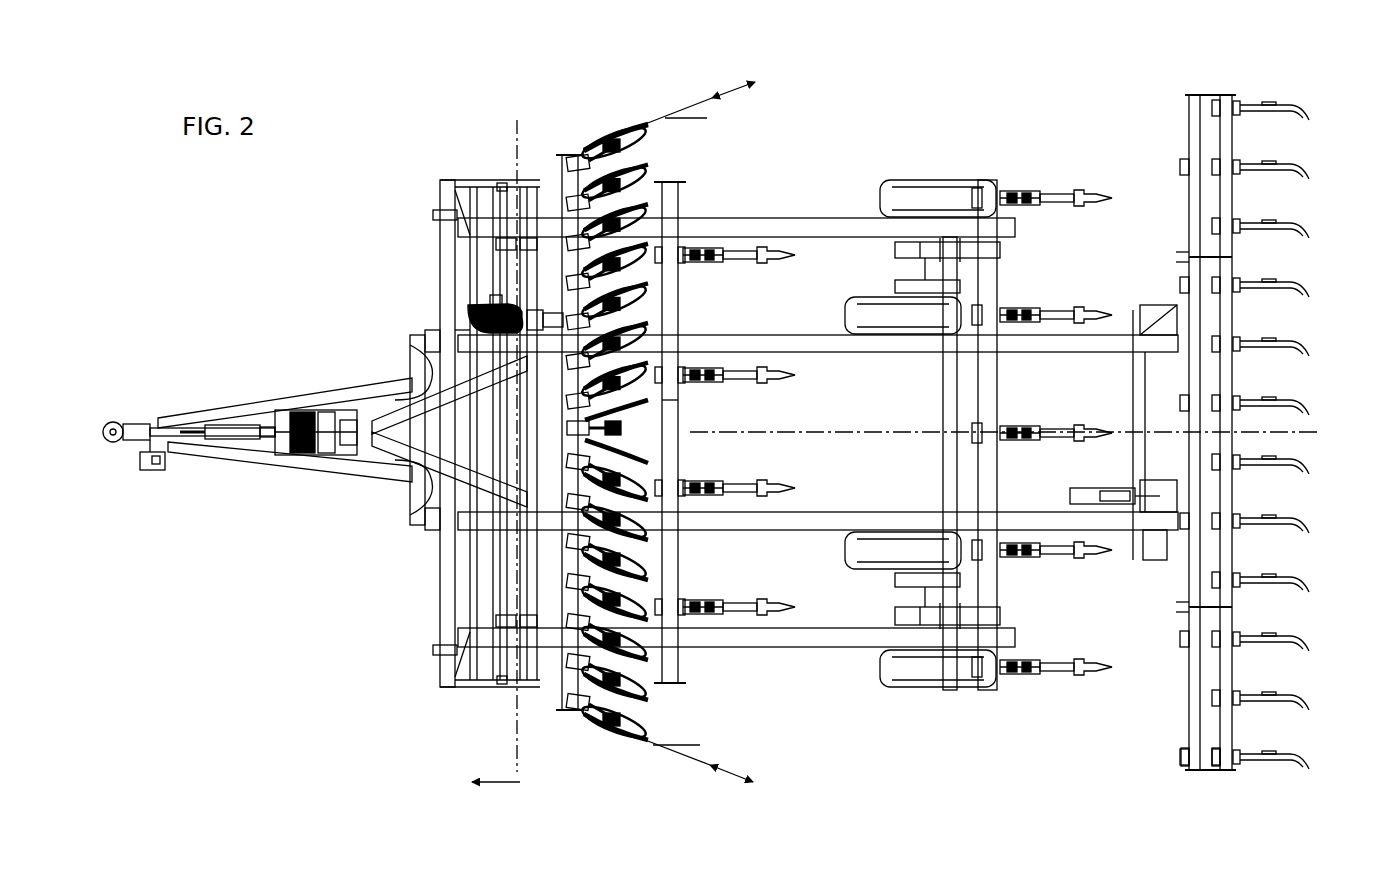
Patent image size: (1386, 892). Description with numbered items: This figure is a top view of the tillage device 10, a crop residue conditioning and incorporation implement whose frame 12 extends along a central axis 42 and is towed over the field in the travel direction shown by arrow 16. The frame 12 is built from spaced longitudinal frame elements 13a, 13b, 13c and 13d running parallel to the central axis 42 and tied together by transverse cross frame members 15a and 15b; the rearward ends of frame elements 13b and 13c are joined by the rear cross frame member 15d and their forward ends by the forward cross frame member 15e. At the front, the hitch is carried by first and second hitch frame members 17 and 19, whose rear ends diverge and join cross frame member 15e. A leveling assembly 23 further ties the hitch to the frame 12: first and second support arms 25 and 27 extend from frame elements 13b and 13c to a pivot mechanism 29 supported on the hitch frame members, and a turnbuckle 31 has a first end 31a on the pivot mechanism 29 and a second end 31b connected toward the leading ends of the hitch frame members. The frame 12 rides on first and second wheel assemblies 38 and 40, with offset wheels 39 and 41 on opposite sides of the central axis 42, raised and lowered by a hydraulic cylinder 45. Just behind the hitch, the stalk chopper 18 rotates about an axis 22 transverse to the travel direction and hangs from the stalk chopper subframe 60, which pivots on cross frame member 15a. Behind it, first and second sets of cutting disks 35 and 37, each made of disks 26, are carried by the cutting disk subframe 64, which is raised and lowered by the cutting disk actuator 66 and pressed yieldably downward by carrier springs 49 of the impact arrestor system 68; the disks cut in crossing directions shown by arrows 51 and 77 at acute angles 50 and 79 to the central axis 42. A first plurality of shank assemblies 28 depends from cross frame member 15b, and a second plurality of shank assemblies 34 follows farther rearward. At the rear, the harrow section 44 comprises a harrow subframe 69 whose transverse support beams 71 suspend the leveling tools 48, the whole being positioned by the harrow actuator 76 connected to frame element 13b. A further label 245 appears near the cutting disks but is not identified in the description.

The tillage device 10 is at (335, 625).
The frame 12 is at (705, 650).
The frame element 13a is at (752, 645).
The frame element 13b is at (750, 527).
The frame element 13c is at (818, 355).
The frame element 13d is at (793, 218).
The cross frame member 15a is at (466, 686).
The cross frame member 15b is at (675, 450).
The rear cross frame member 15d is at (1135, 380).
The forward cross frame member 15e is at (404, 503).
The travel direction 16 is at (493, 786).
The first hitch frame member 17 is at (242, 410).
The stalk chopper 18 is at (499, 178).
The second hitch frame member 19 is at (230, 456).
The axis 22 is at (517, 775).
The leveling assembly 23 is at (303, 470).
The first support arm 25 is at (412, 398).
The disk 26 is at (642, 128).
The second support arm 27 is at (440, 483).
The shank assembly 28 is at (740, 264).
The pivot mechanism 29 is at (294, 418).
The turnbuckle 31 is at (224, 426).
The first end 31a is at (264, 440).
The second end 31b is at (184, 448).
The shank assembly 34 is at (1057, 190).
The first set of cutting disks 35 is at (648, 292).
The second set of cutting disks 37 is at (647, 562).
The first wheel assembly 38 is at (856, 225).
The wheel 39 is at (900, 192).
The second wheel assembly 40 is at (880, 600).
The wheel 41 is at (858, 316).
The central axis 42 is at (108, 430).
The harrow section 44 is at (1226, 93).
The hydraulic cylinder 45 is at (955, 250).
The leveling tool 48 is at (1303, 107).
The carrier spring 49 is at (500, 312).
The acute angle 50 is at (693, 110).
The arrow 51 is at (733, 94).
The stalk chopper subframe 60 is at (437, 625).
The cutting disk subframe 64 is at (567, 185).
The cutting disk actuator 66 is at (490, 305).
The impact arrestor system 68 is at (470, 322).
The harrow subframe 69 is at (1184, 93).
The support beam 71 is at (1193, 746).
The harrow actuator 76 is at (1115, 510).
The arrow 77 is at (733, 772).
The acute angle 79 is at (678, 752).
The center disc 245 is at (612, 208).